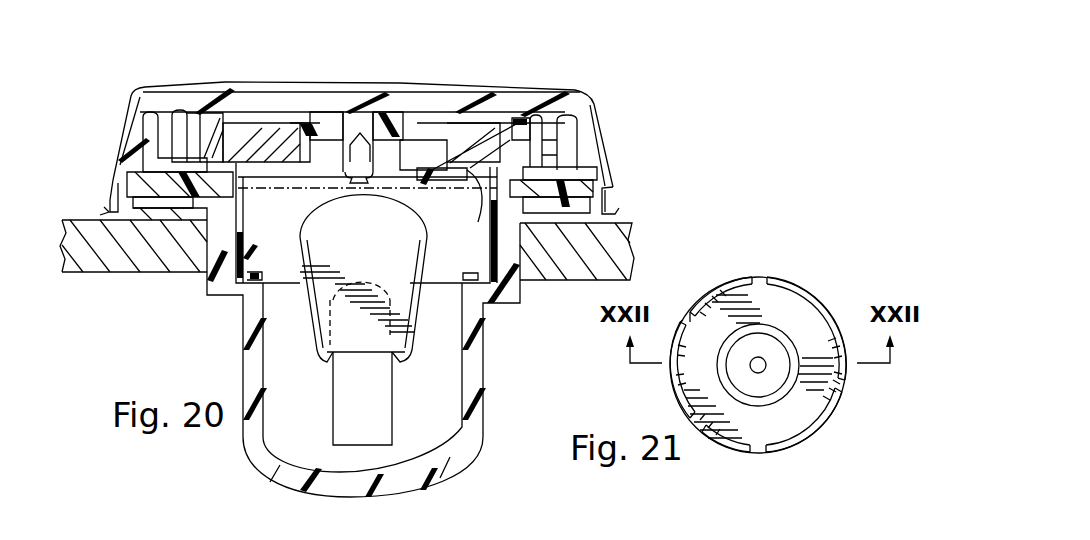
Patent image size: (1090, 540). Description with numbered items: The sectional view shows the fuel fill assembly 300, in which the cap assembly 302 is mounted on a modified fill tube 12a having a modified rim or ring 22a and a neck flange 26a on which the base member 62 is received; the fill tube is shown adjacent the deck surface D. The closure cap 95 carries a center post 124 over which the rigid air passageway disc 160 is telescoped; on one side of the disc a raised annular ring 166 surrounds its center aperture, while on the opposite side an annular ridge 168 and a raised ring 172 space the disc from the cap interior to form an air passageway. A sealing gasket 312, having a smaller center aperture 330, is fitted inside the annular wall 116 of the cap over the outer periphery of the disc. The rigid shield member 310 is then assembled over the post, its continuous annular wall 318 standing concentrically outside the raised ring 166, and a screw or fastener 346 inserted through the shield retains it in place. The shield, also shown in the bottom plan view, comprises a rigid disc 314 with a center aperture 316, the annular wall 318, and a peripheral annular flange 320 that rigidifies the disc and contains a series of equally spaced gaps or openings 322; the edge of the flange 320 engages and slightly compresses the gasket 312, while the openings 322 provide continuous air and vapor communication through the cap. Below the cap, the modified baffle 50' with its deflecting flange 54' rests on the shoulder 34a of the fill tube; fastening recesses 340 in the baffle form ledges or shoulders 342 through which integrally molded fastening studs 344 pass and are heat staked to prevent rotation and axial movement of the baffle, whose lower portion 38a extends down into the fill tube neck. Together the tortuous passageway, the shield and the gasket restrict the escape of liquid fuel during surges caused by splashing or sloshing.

In FIG. 20, the fuel fill assembly 300 is at (640, 107).
In FIG. 20, the cap assembly 302 is at (552, 92).
In FIG. 20, the closure cap 95 is at (213, 91).
In FIG. 20, the air passageway disc 160 is at (256, 120).
In FIG. 20, the annular wall 318 is at (307, 160).
In FIG. 21, the annular wall 318 is at (752, 405).
In FIG. 20, the center post 124 is at (360, 112).
In FIG. 20, the raised ring 172 is at (403, 120).
In FIG. 20, the center aperture 330 is at (452, 132).
In FIG. 20, the sealing gasket 312 is at (482, 133).
In FIG. 20, the annular ridge 168 is at (503, 123).
In FIG. 20, the annular wall 116 is at (568, 117).
In FIG. 20, the base member 62 is at (616, 186).
In FIG. 20, the rim or ring 22a is at (240, 181).
In FIG. 20, the dash board D is at (632, 252).
In FIG. 20, the neck flange 26a is at (203, 222).
In FIG. 20, the fill tube 12a is at (240, 353).
In FIG. 20, the baffle 50' is at (210, 315).
In FIG. 20, the shoulder 34a is at (471, 286).
In FIG. 20, the fastening recesses 340 is at (248, 257).
In FIG. 20, the ledges or shoulders 342 is at (258, 277).
In FIG. 20, the rigid shield member 310 is at (424, 187).
In FIG. 21, the rigid shield member 310 is at (830, 282).
In FIG. 20, the annular flange 320 is at (478, 222).
In FIG. 21, the annular flange 320 is at (721, 286).
In FIG. 20, the fastening studs 344 is at (471, 273).
In FIG. 20, the deflecting flange 54' is at (363, 278).
In FIG. 20, the raised annular ring 166 is at (335, 170).
In FIG. 20, the screw or fastener 346 is at (367, 170).
In FIG. 20, the plunger stem 38a is at (390, 418).
In FIG. 21, the rigid disc 314 is at (790, 294).
In FIG. 21, the center aperture 316 is at (766, 360).
In FIG. 21, the gaps or openings 322 is at (686, 318).